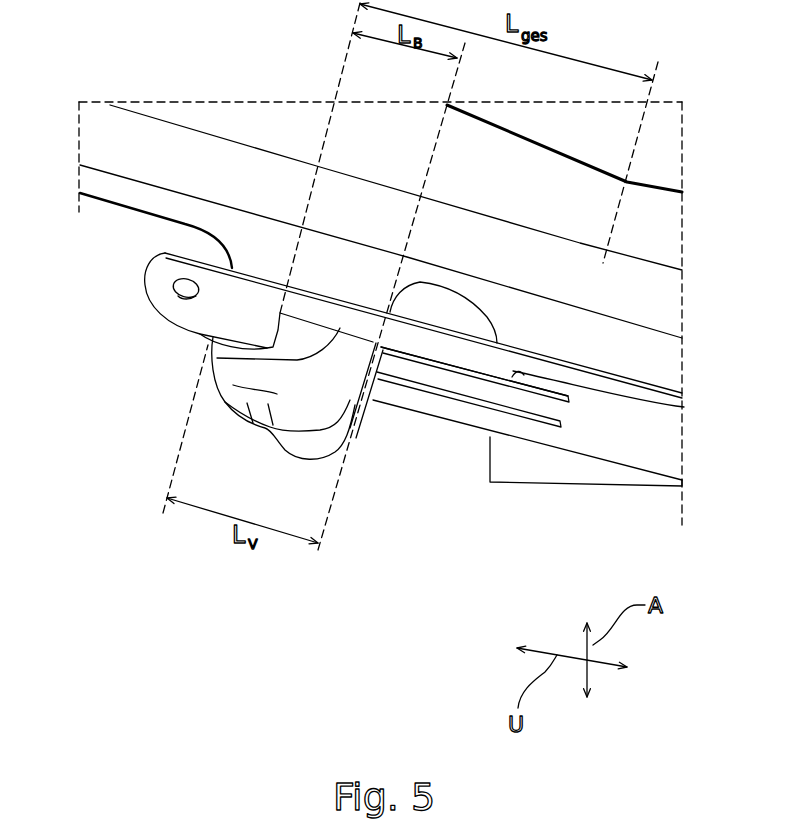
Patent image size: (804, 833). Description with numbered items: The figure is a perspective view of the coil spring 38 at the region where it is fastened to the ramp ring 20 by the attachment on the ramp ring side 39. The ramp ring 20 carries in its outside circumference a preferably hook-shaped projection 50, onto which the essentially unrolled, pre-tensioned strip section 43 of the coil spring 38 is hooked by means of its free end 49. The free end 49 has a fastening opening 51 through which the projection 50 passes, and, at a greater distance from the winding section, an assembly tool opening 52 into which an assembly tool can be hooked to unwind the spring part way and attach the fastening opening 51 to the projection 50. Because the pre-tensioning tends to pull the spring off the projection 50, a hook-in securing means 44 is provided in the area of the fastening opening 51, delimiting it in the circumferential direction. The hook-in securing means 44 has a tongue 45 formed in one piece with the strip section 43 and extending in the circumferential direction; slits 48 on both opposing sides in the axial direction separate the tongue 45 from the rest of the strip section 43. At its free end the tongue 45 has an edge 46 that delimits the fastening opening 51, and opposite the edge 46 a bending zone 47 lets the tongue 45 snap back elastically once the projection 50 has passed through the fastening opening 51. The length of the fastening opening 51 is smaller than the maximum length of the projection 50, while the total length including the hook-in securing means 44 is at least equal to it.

The ramp ring 20 is at (668, 302).
The coil spring 38 is at (668, 430).
The attachment on ramp ring side 39 is at (357, 448).
The strip section 43 is at (621, 454).
The hook-in securing means 44 is at (468, 388).
The tongue 45 is at (447, 383).
The edge 46 is at (377, 403).
The bending zone 47 is at (552, 412).
The slit 48 is at (684, 408).
The free end 49 is at (167, 252).
The projection 50 is at (230, 387).
The fastening opening 51 is at (207, 357).
The assembly tool opening 52 is at (183, 287).